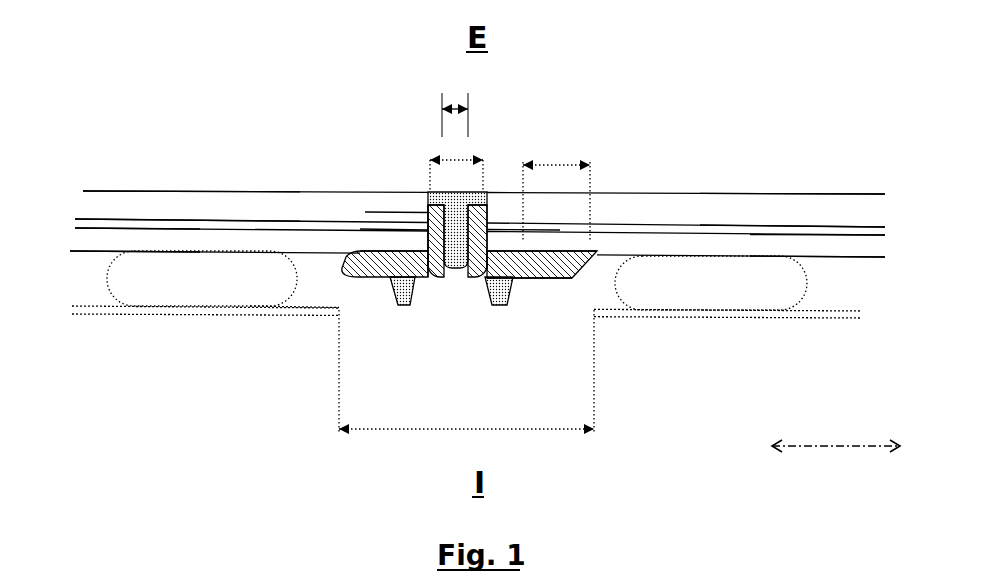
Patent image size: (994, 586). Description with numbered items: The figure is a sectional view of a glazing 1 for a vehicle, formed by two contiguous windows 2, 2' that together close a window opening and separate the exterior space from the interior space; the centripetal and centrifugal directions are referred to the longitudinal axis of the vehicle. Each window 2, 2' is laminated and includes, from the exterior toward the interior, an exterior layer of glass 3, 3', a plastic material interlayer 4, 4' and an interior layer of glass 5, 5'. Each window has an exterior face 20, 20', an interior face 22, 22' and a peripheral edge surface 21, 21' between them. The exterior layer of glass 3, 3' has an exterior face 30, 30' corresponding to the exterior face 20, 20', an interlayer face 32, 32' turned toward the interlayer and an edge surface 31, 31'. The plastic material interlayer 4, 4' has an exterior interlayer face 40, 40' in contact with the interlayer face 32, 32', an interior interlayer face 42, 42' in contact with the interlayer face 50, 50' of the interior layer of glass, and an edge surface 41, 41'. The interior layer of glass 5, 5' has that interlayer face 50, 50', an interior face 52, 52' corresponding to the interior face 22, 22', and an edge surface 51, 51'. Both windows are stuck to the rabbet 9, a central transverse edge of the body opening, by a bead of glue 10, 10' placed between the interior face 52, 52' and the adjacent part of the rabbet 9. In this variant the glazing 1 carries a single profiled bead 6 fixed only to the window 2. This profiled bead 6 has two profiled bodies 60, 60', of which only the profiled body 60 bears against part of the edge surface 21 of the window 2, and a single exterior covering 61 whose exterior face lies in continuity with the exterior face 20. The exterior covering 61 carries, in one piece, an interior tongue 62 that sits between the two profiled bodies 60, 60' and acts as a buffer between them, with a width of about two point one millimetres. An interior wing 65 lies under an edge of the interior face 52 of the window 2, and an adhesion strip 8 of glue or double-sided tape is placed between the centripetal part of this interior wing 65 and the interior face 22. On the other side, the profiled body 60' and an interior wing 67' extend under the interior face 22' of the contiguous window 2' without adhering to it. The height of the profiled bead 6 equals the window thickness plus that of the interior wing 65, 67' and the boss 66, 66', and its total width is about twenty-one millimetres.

The glazing 1 is at (394, 66).
The window 2 is at (711, 237).
The contiguous window 2' is at (228, 245).
The exterior layer of glass 3 is at (711, 180).
The exterior layer of glass 3' is at (238, 166).
The plastic material interlayer 4 is at (711, 230).
The plastic material interlayer 4' is at (222, 240).
The interior layer of glass 5 is at (758, 283).
The interior layer of glass 5' is at (191, 283).
The profiled bead 6 is at (452, 348).
The adhesion strip 8 is at (562, 279).
The rabbet 9 is at (300, 315).
The bead of glue 10 is at (711, 309).
The bead of glue 10' is at (202, 310).
The exterior face 20 is at (812, 156).
The exterior face 20' is at (191, 163).
The peripheral edge surface 21 is at (588, 200).
The peripheral edge surface 21' is at (360, 182).
The interior face 22 is at (837, 275).
The interior face 22' is at (135, 303).
The exterior face 30 is at (812, 156).
The exterior face 30' is at (191, 163).
The edge surface 31 is at (516, 203).
The edge surface 31' is at (393, 208).
The interlayer face 32 is at (792, 176).
The interlayer face 32' is at (187, 173).
The exterior interlayer face 40 is at (792, 176).
The exterior interlayer face 40' is at (187, 173).
The edge surface 41 is at (525, 198).
The edge surface 41' is at (361, 253).
The interior interlayer face 42 is at (817, 297).
The interior interlayer face 42' is at (111, 306).
The interlayer face 50 is at (817, 297).
The interlayer face 50' is at (111, 306).
The edge surface 51 is at (541, 276).
The edge surface 51' is at (367, 280).
The interior face 52 is at (837, 275).
The interior face 52' is at (135, 303).
The profiled body 60 is at (469, 282).
The profiled body 60' is at (433, 280).
The exterior covering 61 is at (430, 191).
The interior tongue 62 is at (478, 191).
The interior wing 65 is at (597, 256).
The boss 66 is at (518, 318).
The boss 66' is at (388, 319).
The interior wing 67' is at (376, 301).